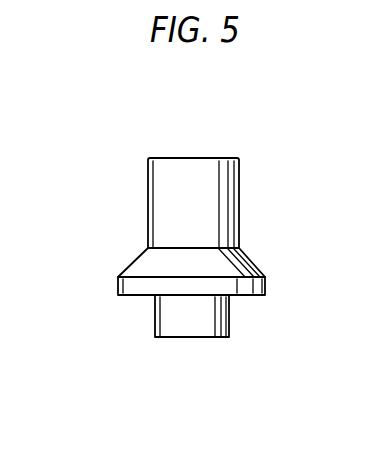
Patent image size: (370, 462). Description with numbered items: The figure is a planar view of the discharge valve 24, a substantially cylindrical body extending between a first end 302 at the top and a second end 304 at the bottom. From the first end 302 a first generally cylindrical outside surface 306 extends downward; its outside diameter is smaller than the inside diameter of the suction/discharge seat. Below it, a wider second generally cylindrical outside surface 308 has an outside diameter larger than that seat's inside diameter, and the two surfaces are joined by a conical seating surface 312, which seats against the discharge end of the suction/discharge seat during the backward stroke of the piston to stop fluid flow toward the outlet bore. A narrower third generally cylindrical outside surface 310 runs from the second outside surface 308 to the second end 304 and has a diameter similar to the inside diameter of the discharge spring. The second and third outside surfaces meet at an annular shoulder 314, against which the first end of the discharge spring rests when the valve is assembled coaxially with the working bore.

The discharge valve 24 is at (98, 164).
The first end 302 is at (199, 157).
The second end 304 is at (194, 338).
The first generally cylindrical outside surface 306 is at (226, 186).
The second generally cylindrical outside surface 308 is at (266, 289).
The third generally cylindrical outside surface 310 is at (230, 321).
The seating surface 312 is at (237, 262).
The annular shoulder 314 is at (88, 300).